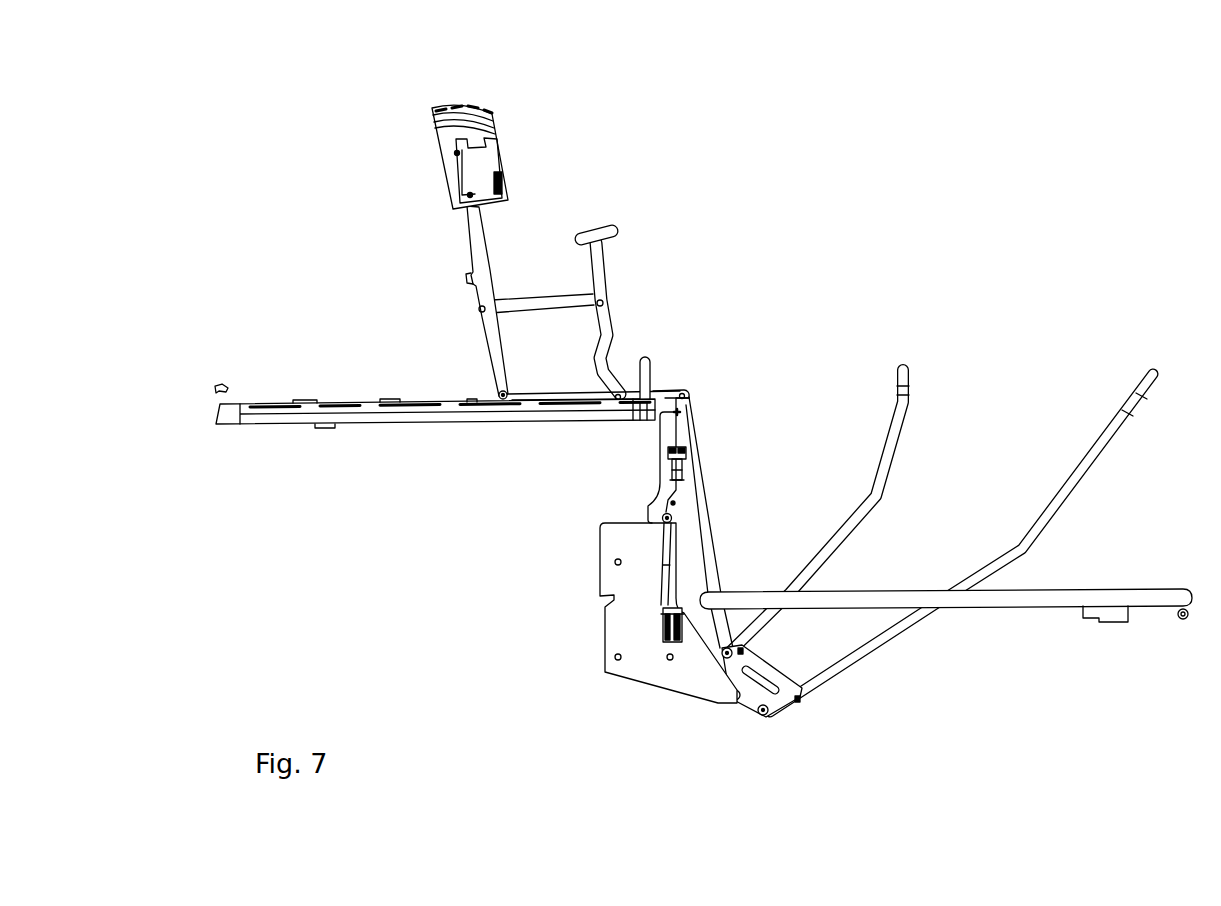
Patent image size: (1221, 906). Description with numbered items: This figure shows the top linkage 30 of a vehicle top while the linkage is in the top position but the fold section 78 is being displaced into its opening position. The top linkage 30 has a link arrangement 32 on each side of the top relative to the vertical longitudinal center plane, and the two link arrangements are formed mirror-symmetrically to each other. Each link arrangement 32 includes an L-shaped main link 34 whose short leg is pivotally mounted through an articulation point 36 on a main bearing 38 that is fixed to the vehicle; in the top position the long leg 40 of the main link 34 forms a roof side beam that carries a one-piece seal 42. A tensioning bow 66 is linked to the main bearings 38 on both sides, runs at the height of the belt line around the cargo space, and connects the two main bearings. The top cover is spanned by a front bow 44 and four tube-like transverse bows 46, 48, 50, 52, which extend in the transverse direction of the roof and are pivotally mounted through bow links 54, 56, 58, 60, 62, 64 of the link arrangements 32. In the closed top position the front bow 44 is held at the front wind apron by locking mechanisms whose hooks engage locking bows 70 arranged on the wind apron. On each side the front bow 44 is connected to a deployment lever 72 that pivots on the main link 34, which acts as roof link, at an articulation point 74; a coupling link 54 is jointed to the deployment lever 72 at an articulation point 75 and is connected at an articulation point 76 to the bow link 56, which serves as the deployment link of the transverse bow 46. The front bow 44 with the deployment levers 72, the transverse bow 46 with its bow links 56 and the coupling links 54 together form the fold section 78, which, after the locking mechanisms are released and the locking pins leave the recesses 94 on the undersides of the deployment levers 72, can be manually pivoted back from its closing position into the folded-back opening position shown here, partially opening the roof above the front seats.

The top linkage 30 is at (726, 456).
The link arrangement 32 is at (700, 455).
The main link 34 is at (435, 418).
The articulation point 36 is at (664, 521).
The main bearing 38 is at (640, 665).
The long leg 40 is at (435, 418).
The one-piece seal 42 is at (358, 398).
The front bow 44 is at (493, 122).
The transverse bow 46 is at (608, 228).
The transverse bow 48 is at (650, 373).
The transverse bow 50 is at (900, 378).
The transverse bow 52 is at (1150, 380).
The bow link 54 is at (546, 299).
The bow link 56 is at (648, 271).
The bow link 58 is at (597, 396).
The bow link 60 is at (717, 533).
The bow link 62 is at (847, 482).
The bow link 64 is at (973, 516).
The tensioning bow 66 is at (1142, 606).
The locking bow 70 is at (224, 387).
The deployment lever 72 is at (462, 288).
The articulation point 74 is at (502, 401).
The articulation point 75 is at (479, 309).
The articulation point 76 is at (605, 300).
The fold section 78 is at (450, 126).
The recess 94 is at (466, 278).